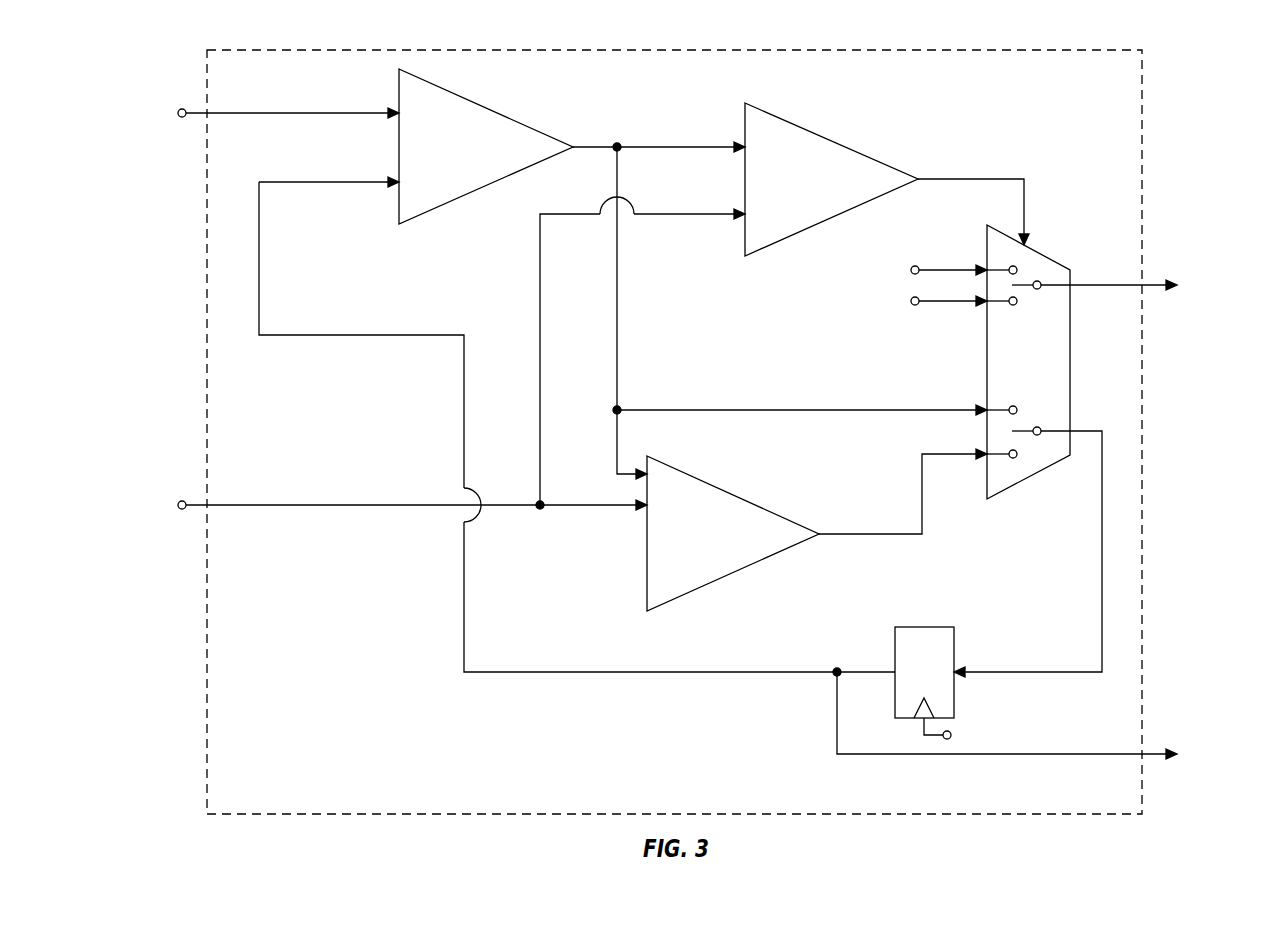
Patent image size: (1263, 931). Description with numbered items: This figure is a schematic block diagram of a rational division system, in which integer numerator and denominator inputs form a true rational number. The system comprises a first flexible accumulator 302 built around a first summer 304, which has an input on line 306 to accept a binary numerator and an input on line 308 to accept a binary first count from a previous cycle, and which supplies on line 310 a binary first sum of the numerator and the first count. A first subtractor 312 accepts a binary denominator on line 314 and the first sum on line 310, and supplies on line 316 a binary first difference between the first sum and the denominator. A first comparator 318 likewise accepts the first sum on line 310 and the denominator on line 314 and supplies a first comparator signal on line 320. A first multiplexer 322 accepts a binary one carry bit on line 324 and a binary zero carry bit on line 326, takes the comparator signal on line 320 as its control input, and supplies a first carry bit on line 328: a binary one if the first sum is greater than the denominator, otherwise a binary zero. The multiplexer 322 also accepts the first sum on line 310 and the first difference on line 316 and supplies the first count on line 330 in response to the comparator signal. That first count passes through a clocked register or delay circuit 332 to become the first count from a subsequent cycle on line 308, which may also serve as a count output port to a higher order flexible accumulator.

The first flexible accumulator 302 is at (1041, 803).
The first summer 304 is at (482, 169).
The numerator input line 306 is at (336, 116).
The first count input line 308 is at (336, 183).
The first sum output line 310 is at (592, 163).
The first subtractor 312 is at (730, 560).
The denominator input line 314 is at (347, 507).
The first difference output line 316 is at (858, 548).
The first comparator 318 is at (828, 205).
The first comparator signal line 320 is at (977, 182).
The first multiplexer 322 is at (1046, 390).
The "1" carry bit line 324 is at (941, 261).
The "0" carry bit line 326 is at (941, 321).
The first carry bit output line 328 is at (1133, 283).
The first count output line 330 is at (1097, 580).
The clocked register 332 is at (942, 681).